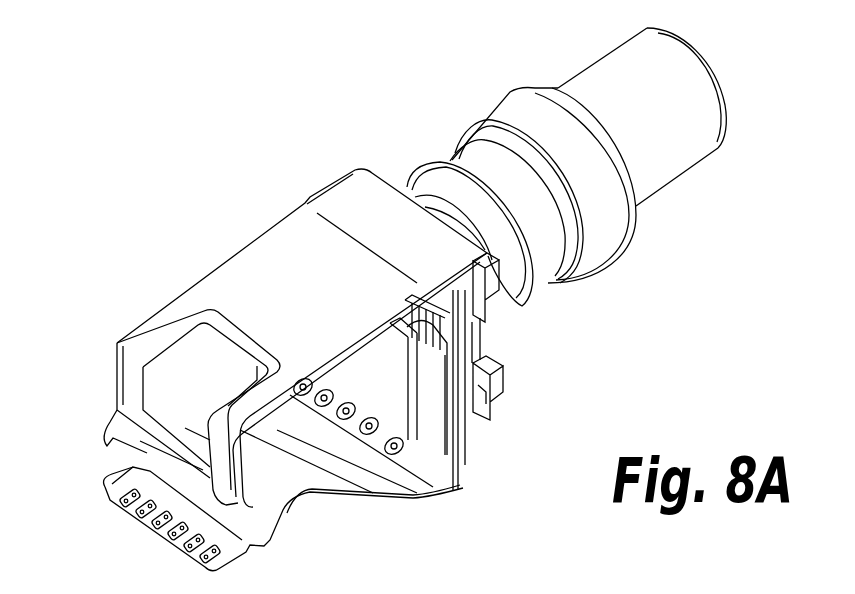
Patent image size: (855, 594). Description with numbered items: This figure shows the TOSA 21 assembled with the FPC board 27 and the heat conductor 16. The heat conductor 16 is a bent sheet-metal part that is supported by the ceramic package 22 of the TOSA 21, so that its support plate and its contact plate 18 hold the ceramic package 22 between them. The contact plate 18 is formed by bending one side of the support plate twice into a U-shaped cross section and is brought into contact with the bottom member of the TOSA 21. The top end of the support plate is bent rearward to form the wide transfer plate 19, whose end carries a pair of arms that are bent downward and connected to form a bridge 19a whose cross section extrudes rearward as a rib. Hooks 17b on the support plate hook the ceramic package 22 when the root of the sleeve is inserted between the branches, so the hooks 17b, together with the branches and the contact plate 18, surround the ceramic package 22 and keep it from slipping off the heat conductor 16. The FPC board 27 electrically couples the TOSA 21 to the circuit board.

The heat conductor 16 is at (305, 333).
The hook 17b is at (490, 300).
The contact plate 18 is at (383, 395).
The transfer plate 19 is at (240, 270).
The bridge 19a is at (103, 445).
The TOSA 21 is at (470, 100).
The ceramic package 22 is at (470, 348).
The FPC board 27 is at (262, 513).